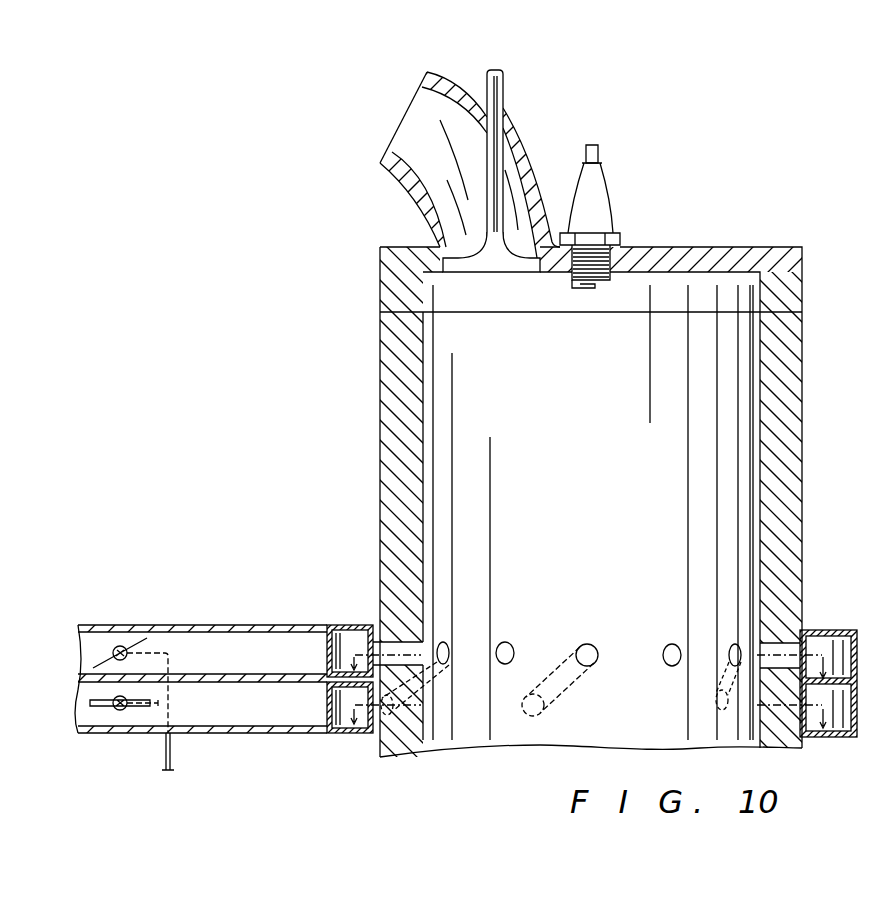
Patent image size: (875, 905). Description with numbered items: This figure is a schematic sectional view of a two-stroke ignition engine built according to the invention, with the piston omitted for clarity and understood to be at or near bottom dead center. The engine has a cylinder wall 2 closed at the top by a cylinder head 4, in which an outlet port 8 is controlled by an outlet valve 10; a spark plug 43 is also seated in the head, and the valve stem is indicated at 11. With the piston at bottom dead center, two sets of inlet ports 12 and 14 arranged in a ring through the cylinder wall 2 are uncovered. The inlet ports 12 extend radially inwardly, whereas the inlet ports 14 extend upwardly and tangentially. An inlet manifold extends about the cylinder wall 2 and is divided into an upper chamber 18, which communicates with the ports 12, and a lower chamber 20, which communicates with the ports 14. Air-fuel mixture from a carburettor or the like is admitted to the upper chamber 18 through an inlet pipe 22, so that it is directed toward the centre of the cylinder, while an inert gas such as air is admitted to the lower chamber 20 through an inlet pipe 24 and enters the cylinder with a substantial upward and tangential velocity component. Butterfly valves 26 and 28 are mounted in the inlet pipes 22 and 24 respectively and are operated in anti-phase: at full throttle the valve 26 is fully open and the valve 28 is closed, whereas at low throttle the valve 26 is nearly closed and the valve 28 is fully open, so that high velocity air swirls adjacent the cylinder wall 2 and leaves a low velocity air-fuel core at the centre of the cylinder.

The cylinder wall 2 is at (782, 408).
The cylinder head 4 is at (790, 272).
The outlet port 8 is at (458, 240).
The outlet valve 10 is at (513, 270).
The valve stem / first fluid passage 11 is at (513, 162).
The inlet ports 12 is at (500, 645).
The inlet ports 14 is at (452, 660).
The upper chamber 18 is at (334, 640).
The lower chamber 20 is at (338, 715).
The inlet pipe 22 is at (232, 650).
The inlet pipe 24 is at (240, 707).
The butterfly valve 26 is at (122, 648).
The butterfly valve 28 is at (100, 708).
The spark plug 43 is at (598, 216).